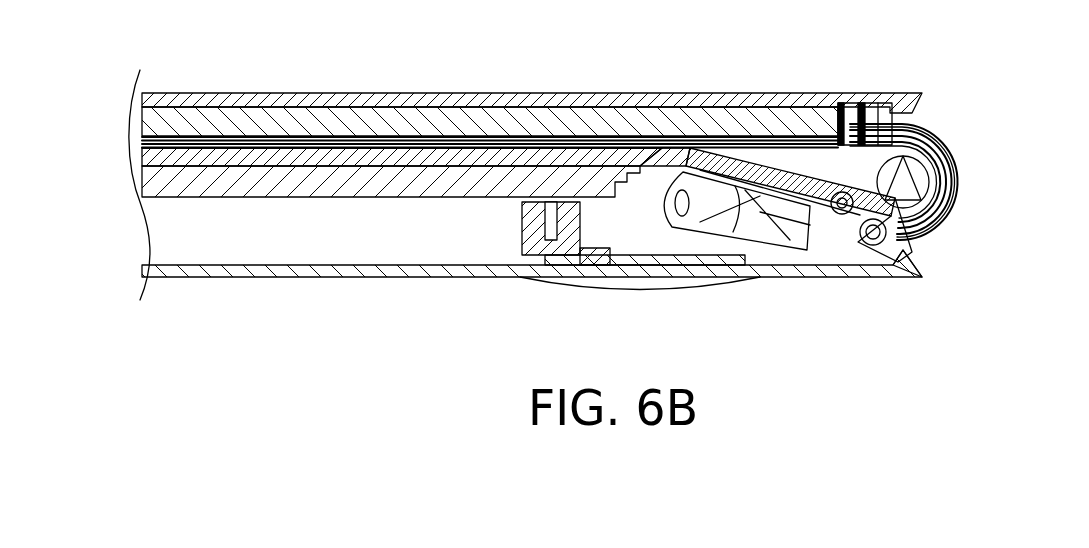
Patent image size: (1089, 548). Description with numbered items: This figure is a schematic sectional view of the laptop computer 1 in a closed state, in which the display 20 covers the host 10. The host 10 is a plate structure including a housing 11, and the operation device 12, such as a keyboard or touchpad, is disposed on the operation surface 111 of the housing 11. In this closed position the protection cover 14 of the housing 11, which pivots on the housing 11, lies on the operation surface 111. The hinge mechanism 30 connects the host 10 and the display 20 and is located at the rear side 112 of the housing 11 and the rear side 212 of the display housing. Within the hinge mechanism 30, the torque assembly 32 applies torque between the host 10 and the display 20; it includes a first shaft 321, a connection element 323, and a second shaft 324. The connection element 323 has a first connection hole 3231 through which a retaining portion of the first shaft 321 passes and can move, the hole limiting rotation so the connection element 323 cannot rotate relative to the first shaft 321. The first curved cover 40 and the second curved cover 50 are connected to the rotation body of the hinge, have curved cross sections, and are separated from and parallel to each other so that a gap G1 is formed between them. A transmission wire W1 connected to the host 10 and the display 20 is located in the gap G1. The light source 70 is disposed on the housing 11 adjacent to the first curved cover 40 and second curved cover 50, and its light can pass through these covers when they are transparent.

The laptop computer 1 is at (52, 46).
The display 20 is at (258, 88).
The operation device 12 is at (320, 155).
The housing 11 is at (626, 157).
The operation surface 111 is at (375, 150).
The protection cover 14 is at (716, 150).
The host 10 is at (258, 282).
The rear side 112 is at (920, 263).
The hinge mechanism 30 is at (858, 205).
The second curved cover 50 is at (872, 135).
The rear side 212 is at (918, 115).
The gap G1 is at (943, 147).
The transmission wire W1 is at (955, 173).
The first curved cover 40 is at (943, 197).
The light source 70 is at (912, 218).
The torque assembly 32 is at (793, 205).
The first shaft 321 is at (775, 244).
The connection element 323 is at (832, 236).
The first connection hole 3231 is at (788, 218).
The second shaft 324 is at (891, 276).